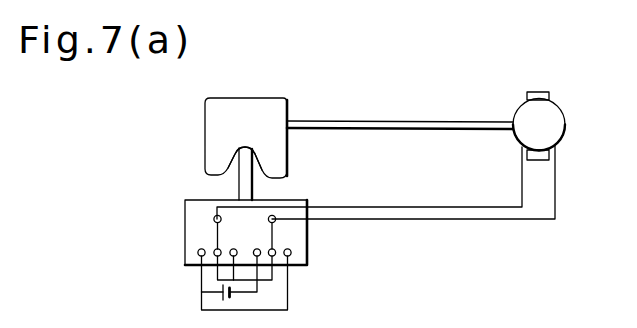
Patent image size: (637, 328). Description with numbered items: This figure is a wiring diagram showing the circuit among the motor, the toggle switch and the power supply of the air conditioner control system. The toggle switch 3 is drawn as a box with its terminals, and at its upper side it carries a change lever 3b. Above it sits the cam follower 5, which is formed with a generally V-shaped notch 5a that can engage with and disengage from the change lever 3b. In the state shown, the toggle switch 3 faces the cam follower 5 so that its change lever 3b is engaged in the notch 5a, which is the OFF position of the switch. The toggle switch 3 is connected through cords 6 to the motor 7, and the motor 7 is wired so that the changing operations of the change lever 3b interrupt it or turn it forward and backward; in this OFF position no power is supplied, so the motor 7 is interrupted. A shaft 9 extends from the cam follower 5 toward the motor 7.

The toggle switch 3 is at (178, 232).
The change lever 3b is at (254, 186).
The cam follower 5 is at (276, 93).
The notch 5a is at (235, 155).
The cords 6 is at (478, 220).
The motor 7 is at (566, 123).
The shaft 9 is at (402, 119).